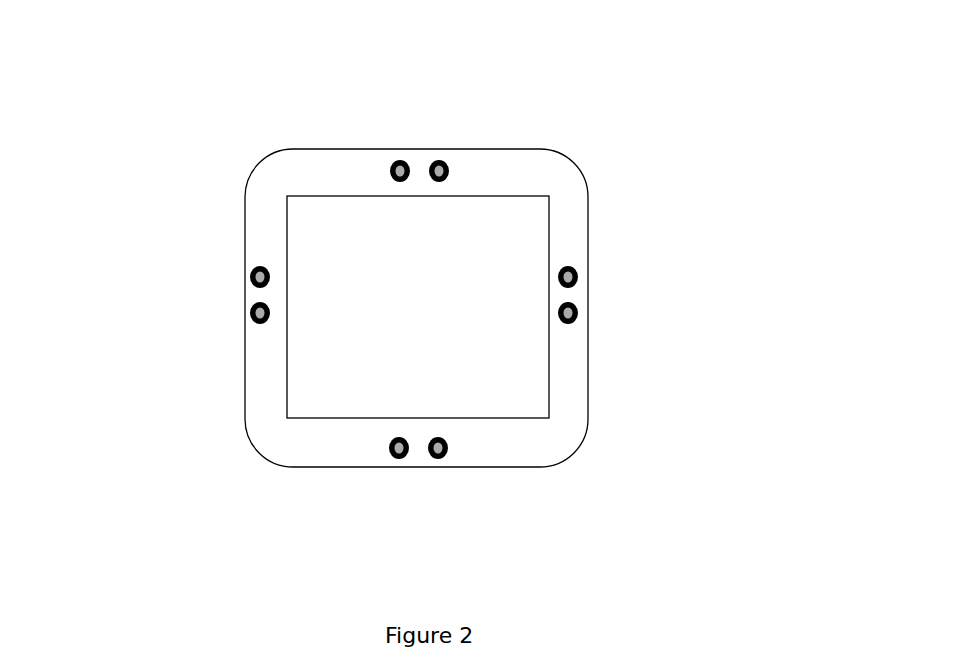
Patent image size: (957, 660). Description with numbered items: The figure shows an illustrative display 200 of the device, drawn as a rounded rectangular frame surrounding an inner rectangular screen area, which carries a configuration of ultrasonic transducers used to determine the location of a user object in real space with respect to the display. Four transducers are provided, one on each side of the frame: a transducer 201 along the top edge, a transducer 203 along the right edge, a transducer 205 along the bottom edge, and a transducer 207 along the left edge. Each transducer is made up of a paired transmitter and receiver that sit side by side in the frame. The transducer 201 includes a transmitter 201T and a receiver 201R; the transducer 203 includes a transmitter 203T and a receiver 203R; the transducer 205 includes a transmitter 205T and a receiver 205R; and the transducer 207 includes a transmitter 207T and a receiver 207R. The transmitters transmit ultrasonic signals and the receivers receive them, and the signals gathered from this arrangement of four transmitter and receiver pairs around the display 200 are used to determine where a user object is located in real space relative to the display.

The display 200 is at (734, 147).
The transducer 201 is at (452, 120).
The transmitter 201T is at (396, 161).
The receiver 201R is at (446, 161).
The transducer 203 is at (627, 297).
The transmitter 203T is at (577, 270).
The receiver 203R is at (577, 322).
The transducer 205 is at (417, 499).
The transmitter 205T is at (394, 458).
The receiver 205R is at (444, 458).
The transducer 207 is at (193, 288).
The transmitter 207T is at (251, 268).
The receiver 207R is at (252, 322).